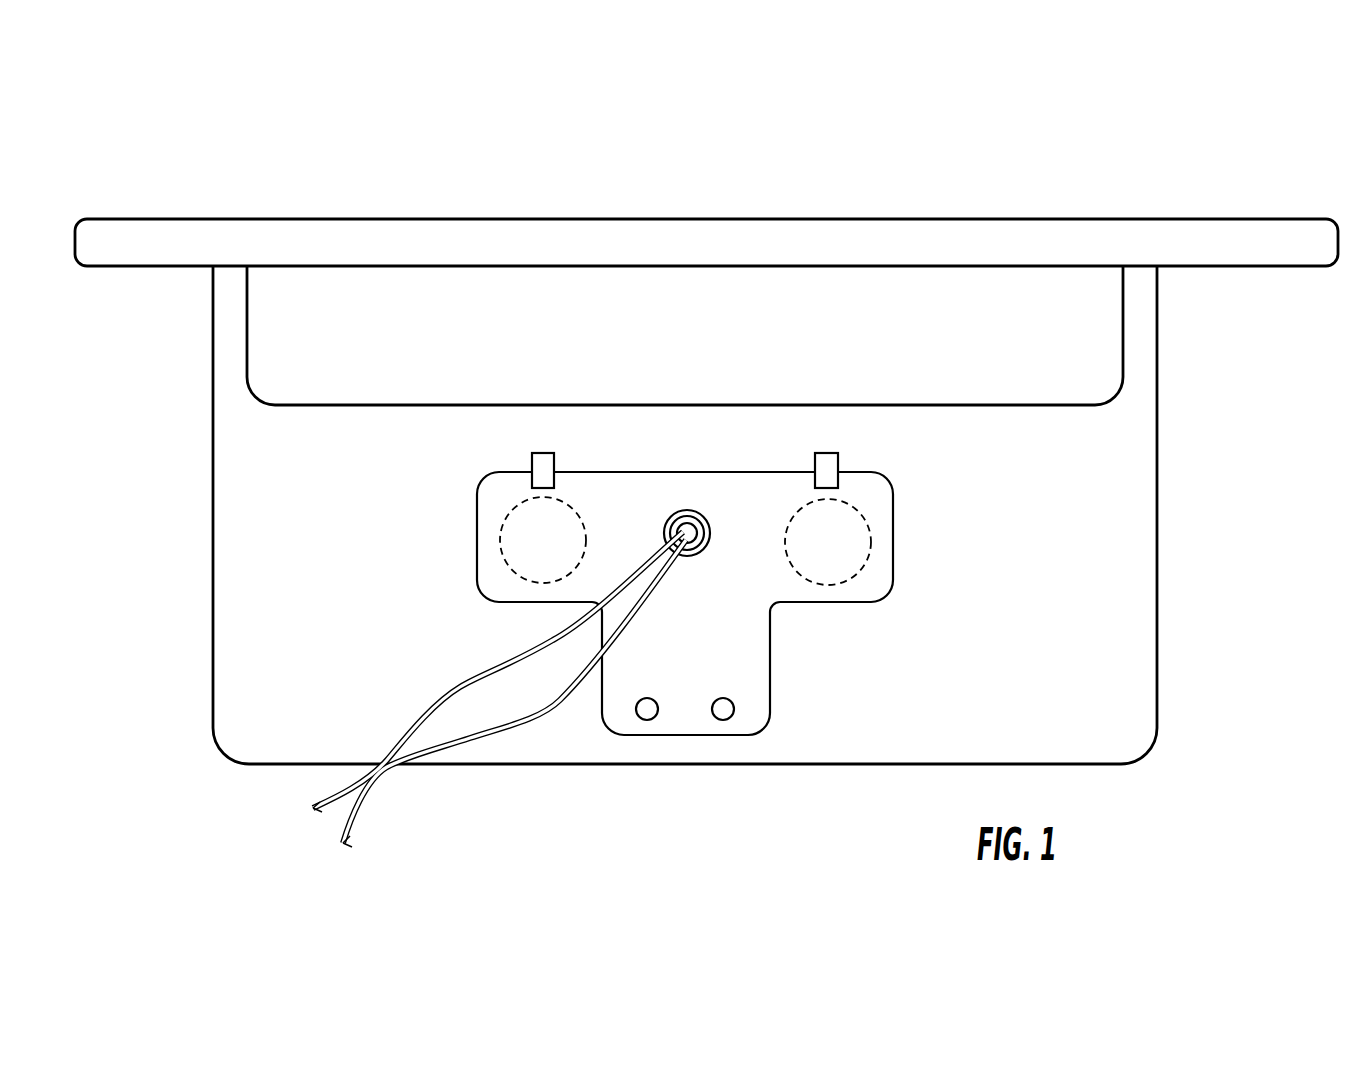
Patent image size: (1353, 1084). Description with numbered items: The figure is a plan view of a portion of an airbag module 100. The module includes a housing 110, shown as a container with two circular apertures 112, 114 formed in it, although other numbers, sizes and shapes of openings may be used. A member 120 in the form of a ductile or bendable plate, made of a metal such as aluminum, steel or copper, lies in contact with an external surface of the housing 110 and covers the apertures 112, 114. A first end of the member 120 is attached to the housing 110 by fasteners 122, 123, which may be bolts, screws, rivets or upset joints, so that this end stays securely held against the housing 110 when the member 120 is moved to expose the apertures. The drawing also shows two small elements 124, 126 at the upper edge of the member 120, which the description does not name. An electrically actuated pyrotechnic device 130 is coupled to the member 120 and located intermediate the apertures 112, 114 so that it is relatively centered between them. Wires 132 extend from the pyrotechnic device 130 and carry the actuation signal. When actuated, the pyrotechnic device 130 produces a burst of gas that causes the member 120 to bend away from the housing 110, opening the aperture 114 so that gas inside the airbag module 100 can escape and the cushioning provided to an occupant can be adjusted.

The airbag module 100 is at (1082, 205).
The housing 110 is at (263, 440).
The aperture 112 is at (513, 540).
The aperture 114 is at (840, 537).
The member 120 is at (608, 497).
The fastener 122 is at (647, 720).
The fastener 123 is at (723, 720).
The first tab 124 is at (543, 453).
The second tab 126 is at (823, 453).
The pyrotechnic device 130 is at (683, 510).
The wires 132 is at (428, 813).